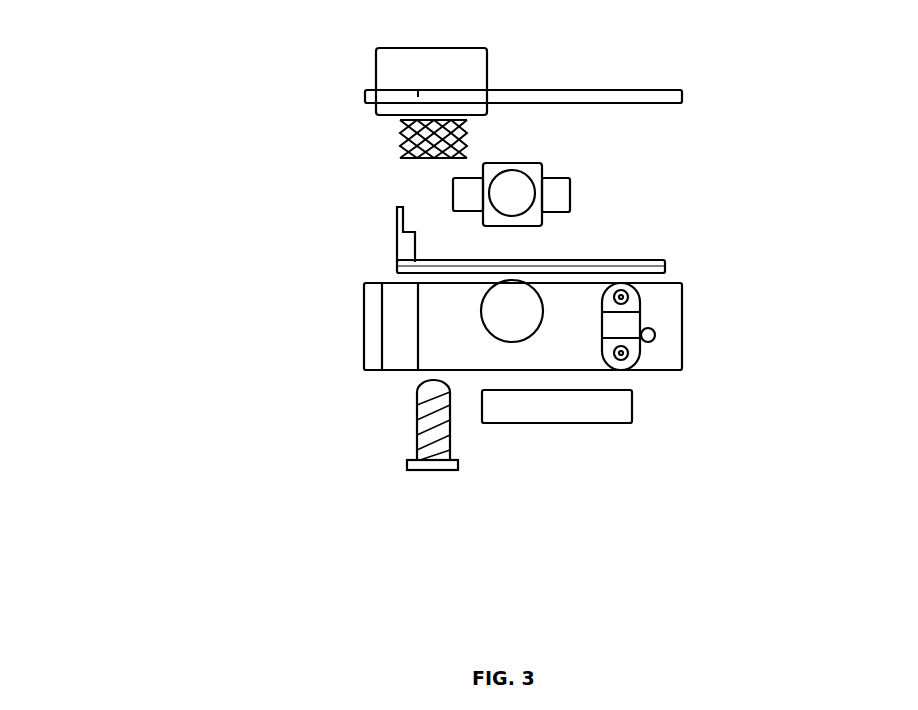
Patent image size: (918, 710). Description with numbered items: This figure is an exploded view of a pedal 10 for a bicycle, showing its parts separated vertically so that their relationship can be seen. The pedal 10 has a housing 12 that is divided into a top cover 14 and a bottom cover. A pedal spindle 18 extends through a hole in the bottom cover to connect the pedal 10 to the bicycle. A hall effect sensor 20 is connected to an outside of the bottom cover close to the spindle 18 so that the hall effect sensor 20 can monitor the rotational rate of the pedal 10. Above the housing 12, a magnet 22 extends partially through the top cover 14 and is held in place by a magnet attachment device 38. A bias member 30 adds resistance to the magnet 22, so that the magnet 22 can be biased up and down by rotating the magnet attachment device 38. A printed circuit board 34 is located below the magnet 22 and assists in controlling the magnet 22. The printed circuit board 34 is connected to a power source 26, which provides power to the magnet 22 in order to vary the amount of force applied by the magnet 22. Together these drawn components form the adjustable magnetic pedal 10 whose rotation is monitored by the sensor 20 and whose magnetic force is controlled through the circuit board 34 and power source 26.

The pedal 10 is at (170, 139).
The housing 12 is at (363, 330).
The top cover 14 is at (362, 95).
The pedal spindle 18 is at (456, 197).
The hall effect sensor 20 is at (642, 307).
The magnet 22 is at (373, 107).
The power source 26 is at (628, 425).
The bias member 30 is at (402, 158).
The printed circuit board 34 is at (397, 263).
The magnet attachment device 38 is at (430, 472).